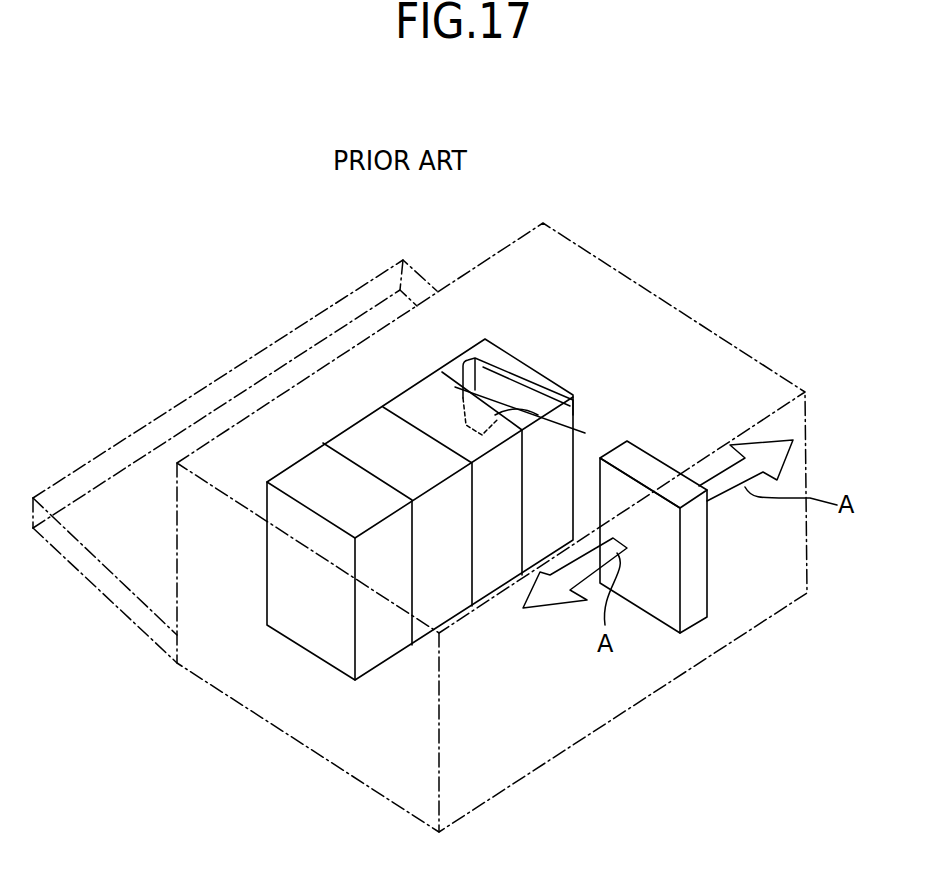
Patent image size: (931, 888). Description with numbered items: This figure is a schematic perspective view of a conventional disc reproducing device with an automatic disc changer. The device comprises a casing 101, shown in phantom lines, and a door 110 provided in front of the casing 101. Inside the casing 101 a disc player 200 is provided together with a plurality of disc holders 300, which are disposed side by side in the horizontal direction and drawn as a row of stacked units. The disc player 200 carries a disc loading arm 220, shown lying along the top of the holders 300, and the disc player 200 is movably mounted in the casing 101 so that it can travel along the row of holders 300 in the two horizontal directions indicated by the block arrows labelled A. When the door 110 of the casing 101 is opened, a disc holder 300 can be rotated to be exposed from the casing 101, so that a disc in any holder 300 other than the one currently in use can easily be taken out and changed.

The casing 101 is at (730, 342).
The door 110 is at (227, 373).
The disc holders 300 is at (342, 430).
The disc loading arm 220 is at (513, 393).
The disc player 200 is at (713, 587).